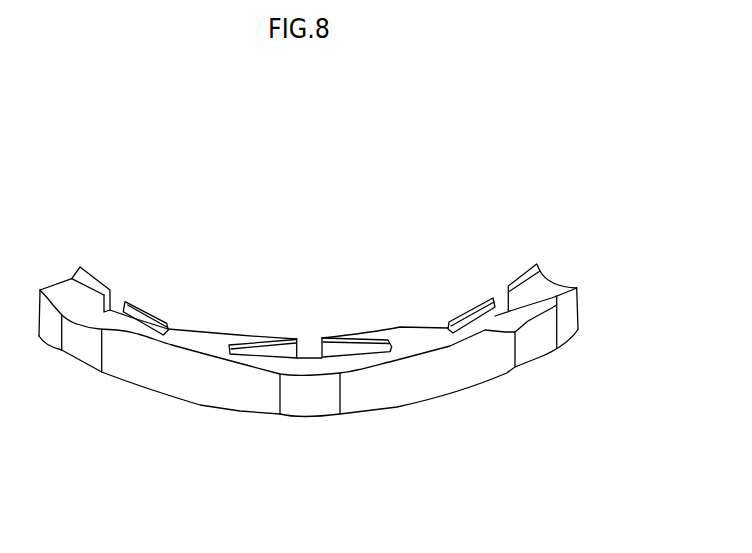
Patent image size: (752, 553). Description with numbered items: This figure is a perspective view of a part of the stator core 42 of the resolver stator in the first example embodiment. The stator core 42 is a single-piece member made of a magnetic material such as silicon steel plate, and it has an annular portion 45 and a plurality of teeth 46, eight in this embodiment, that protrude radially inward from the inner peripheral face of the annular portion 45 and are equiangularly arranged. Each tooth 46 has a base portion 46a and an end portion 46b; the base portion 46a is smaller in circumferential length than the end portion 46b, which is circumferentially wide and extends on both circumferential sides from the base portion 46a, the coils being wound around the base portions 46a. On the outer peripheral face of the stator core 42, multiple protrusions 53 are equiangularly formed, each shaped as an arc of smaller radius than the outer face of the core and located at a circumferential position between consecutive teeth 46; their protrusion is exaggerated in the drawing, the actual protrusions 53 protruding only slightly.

The stator core 42 is at (565, 392).
The annular portion 45 is at (478, 376).
The teeth 46 is at (214, 296).
The base portion 46a is at (415, 333).
The end portion 46b is at (347, 330).
The protrusions 53 is at (77, 357).